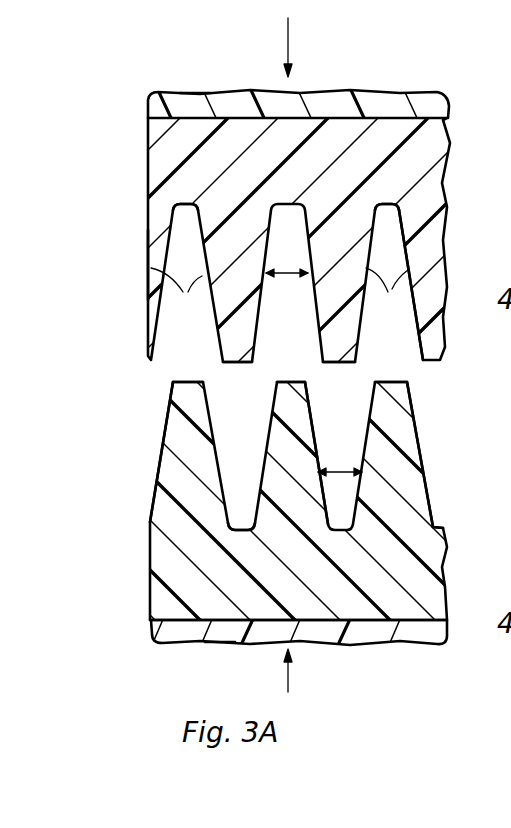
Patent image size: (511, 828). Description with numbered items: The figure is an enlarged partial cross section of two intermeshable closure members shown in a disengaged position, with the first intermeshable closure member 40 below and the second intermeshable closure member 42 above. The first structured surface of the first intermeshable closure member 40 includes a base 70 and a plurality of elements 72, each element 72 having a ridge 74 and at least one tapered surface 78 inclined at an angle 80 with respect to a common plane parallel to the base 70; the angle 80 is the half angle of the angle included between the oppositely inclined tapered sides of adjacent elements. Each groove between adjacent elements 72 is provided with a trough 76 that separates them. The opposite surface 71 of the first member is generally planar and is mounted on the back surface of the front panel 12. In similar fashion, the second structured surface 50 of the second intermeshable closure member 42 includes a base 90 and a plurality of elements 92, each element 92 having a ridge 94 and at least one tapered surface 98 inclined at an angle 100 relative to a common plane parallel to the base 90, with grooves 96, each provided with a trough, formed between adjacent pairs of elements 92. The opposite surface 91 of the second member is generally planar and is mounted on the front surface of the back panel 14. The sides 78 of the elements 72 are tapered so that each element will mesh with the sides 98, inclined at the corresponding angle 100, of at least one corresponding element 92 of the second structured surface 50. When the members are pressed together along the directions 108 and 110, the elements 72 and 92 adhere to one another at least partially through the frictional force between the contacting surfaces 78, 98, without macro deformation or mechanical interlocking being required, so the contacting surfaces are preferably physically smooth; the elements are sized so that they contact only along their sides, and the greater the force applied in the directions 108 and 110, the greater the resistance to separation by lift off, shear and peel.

The front panel 12 is at (420, 632).
The back panel 14 is at (390, 100).
The first intermeshable closure member 40 is at (255, 513).
The second intermeshable closure member 42 is at (255, 207).
The second structured surface 50 is at (158, 377).
The base 70 is at (161, 602).
The opposite surface 71 is at (220, 622).
The element 72 is at (170, 478).
The ridge 74 is at (183, 380).
The trough 76 is at (228, 515).
The tapered surface 78 is at (407, 416).
The angle 80 is at (333, 467).
The base 90 is at (430, 150).
The opposite surface 91 is at (192, 117).
The element 92 is at (152, 264).
The ridge 94 is at (230, 363).
The groove 96 is at (172, 209).
The tapered surface 98 is at (279, 297).
The angle 100 is at (287, 268).
The direction 108 is at (290, 675).
The direction 110 is at (289, 30).